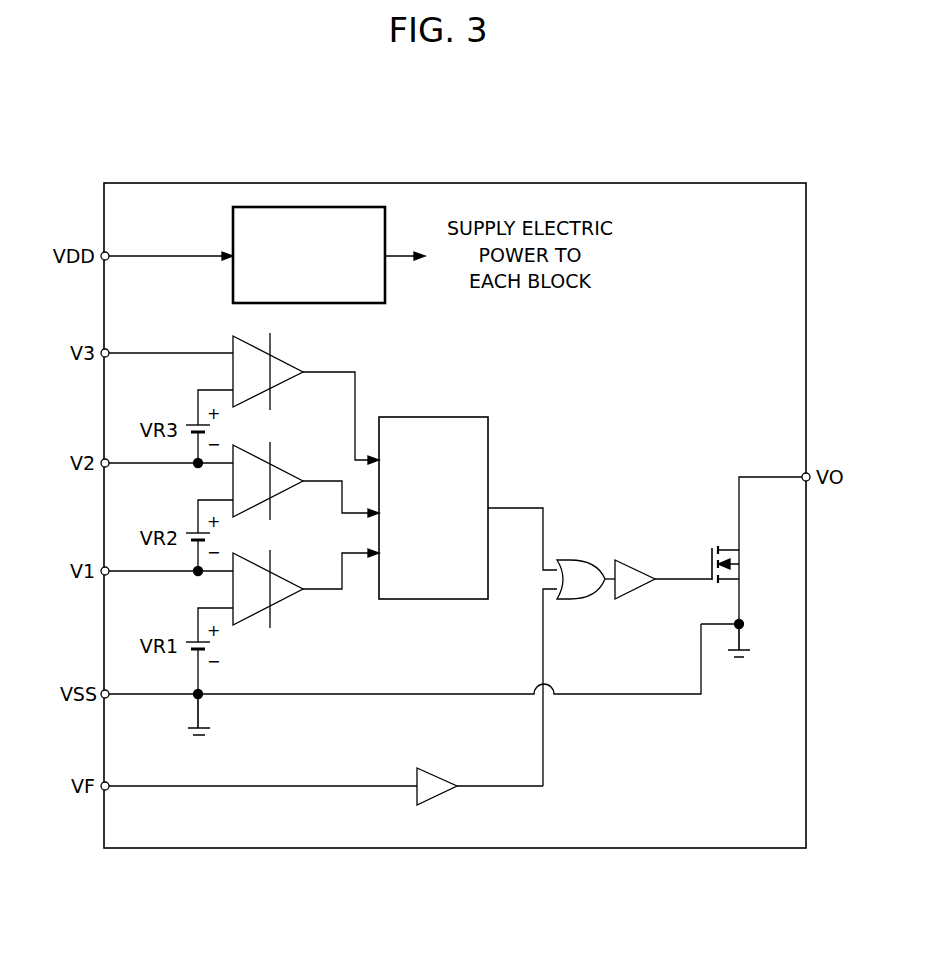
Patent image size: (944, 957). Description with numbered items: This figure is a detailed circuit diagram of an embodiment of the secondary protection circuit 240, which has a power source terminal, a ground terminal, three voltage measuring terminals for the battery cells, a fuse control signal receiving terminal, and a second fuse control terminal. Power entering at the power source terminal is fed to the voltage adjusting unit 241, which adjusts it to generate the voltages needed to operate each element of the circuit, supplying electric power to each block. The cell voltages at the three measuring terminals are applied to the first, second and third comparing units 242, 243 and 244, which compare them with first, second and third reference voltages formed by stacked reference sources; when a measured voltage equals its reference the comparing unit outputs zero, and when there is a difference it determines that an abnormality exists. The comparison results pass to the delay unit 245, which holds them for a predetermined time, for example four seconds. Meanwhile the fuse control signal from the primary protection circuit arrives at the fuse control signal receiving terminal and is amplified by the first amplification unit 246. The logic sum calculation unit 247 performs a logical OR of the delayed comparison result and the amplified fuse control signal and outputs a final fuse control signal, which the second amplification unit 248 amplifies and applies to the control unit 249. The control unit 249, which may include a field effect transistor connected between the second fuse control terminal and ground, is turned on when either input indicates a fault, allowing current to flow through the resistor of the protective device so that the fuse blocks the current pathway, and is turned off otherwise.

The secondary protection circuit 240 is at (630, 183).
The voltage adjusting unit 241 is at (313, 207).
The first comparing unit 242 is at (296, 347).
The second comparing unit 243 is at (284, 457).
The third comparing unit 244 is at (286, 606).
The delay unit 245 is at (453, 417).
The first amplification unit 246 is at (447, 797).
The logic sum calculation unit 247 is at (575, 560).
The second amplification unit 248 is at (637, 560).
The control unit 249 is at (745, 566).